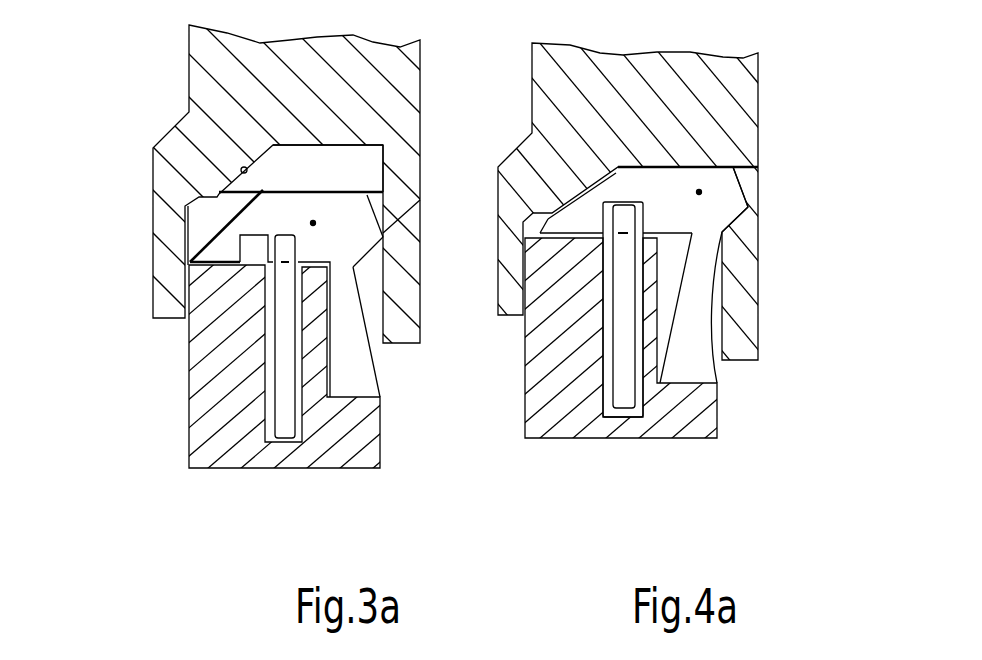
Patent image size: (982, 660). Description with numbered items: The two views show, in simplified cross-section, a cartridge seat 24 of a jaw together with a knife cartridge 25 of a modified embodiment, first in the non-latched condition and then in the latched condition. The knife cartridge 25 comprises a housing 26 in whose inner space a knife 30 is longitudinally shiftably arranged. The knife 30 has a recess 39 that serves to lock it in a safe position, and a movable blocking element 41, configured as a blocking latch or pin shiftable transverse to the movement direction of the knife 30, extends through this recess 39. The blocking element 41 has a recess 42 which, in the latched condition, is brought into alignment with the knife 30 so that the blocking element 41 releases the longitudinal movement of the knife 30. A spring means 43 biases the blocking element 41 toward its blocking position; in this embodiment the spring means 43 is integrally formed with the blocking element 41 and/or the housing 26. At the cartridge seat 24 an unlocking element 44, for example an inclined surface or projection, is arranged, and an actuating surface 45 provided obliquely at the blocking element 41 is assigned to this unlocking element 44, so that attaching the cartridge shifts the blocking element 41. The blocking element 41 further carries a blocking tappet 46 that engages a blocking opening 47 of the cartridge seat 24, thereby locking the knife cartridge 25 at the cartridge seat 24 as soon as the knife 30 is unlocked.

In FIG. 3A, the cartridge seat 24 is at (374, 160).
In FIG. 3A, the knife cartridge 25 is at (179, 479).
In FIG. 4A, the knife cartridge 25 is at (534, 466).
In FIG. 3A, the housing 26 is at (357, 453).
In FIG. 4A, the housing 26 is at (703, 419).
In FIG. 3A, the knife 30 is at (297, 416).
In FIG. 4A, the knife 30 is at (630, 388).
In FIG. 3A, the recess 39 is at (284, 252).
In FIG. 3A, the blocking element 41 is at (313, 222).
In FIG. 4A, the blocking element 41 is at (699, 190).
In FIG. 3A, the recess 42 is at (257, 252).
In FIG. 3A, the spring means 43 is at (350, 383).
In FIG. 4A, the spring means 43 is at (690, 299).
In FIG. 3A, the unlocking element 44 is at (241, 168).
In FIG. 4A, the unlocking element 44 is at (559, 191).
In FIG. 3A, the actuating surface 45 is at (213, 227).
In FIG. 4A, the actuating surface 45 is at (682, 307).
In FIG. 4A, the blocking tappet 46 is at (748, 182).
In FIG. 4A, the blocking opening 47 is at (758, 196).